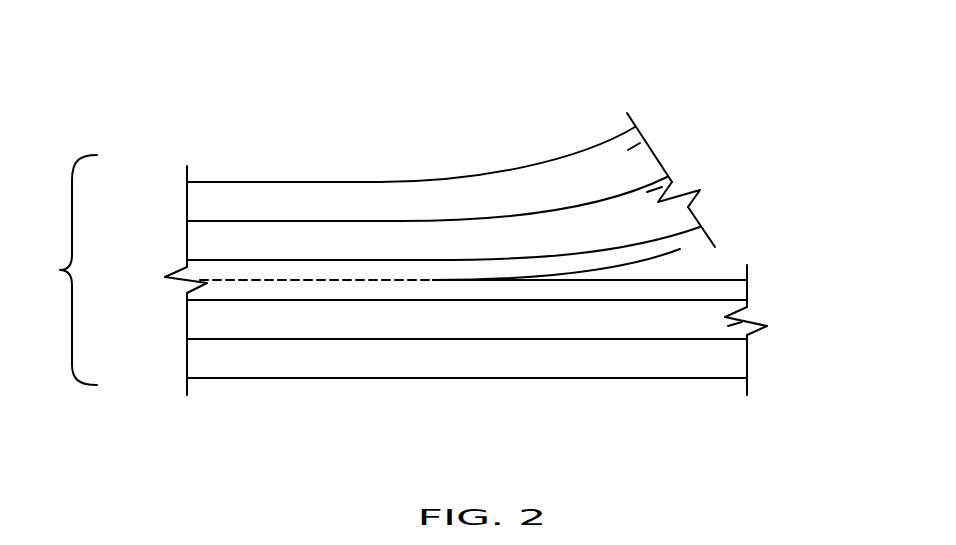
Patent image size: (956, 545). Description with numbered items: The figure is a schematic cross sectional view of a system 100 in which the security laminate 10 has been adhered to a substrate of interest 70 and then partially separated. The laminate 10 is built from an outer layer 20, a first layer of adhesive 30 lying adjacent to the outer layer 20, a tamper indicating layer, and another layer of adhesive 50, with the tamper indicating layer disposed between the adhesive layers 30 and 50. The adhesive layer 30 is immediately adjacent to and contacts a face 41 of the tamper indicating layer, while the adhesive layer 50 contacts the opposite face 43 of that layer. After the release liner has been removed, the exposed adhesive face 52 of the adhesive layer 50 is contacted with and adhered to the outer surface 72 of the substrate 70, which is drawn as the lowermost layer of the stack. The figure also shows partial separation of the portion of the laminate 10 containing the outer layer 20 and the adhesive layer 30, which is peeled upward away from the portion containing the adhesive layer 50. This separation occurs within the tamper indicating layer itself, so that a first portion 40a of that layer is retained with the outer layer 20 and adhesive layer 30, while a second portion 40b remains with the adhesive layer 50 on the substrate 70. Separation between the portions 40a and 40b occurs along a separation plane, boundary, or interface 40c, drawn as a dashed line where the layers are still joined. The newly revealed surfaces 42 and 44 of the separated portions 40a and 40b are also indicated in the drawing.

The security laminate 10 is at (106, 275).
The system 100 is at (181, 86).
The outer layer 20 is at (652, 135).
The first layer of adhesive 30 is at (683, 187).
The first portion of tamper indicating layer 40a is at (713, 222).
The second portion of tamper indicating layer 40b is at (740, 291).
The separation plane 40c is at (233, 280).
The face of tamper indicating layer 41 is at (253, 221).
The first surface of release layer portion 42 is at (680, 249).
The face of tamper indicating layer 43 is at (226, 301).
The top surface of second release layer portion 44 is at (720, 280).
The second layer of adhesive 50 is at (745, 320).
The adhesive face 52 is at (205, 339).
The substrate 70 is at (730, 363).
The outer surface of substrate 72 is at (653, 338).